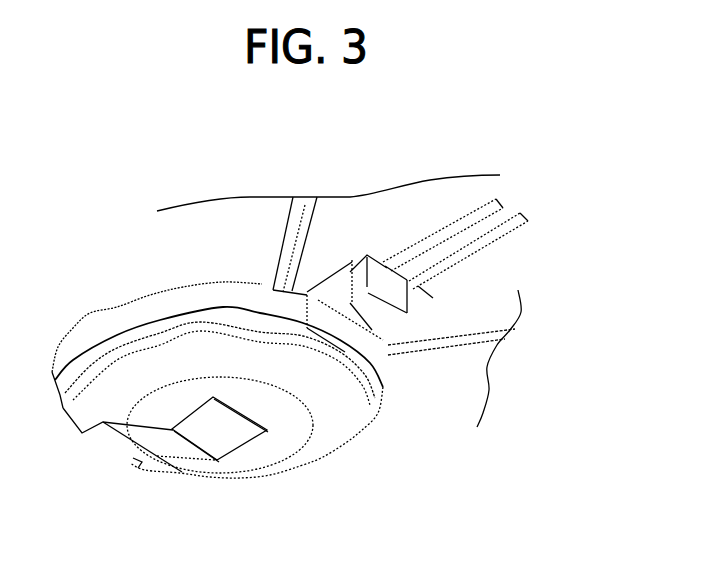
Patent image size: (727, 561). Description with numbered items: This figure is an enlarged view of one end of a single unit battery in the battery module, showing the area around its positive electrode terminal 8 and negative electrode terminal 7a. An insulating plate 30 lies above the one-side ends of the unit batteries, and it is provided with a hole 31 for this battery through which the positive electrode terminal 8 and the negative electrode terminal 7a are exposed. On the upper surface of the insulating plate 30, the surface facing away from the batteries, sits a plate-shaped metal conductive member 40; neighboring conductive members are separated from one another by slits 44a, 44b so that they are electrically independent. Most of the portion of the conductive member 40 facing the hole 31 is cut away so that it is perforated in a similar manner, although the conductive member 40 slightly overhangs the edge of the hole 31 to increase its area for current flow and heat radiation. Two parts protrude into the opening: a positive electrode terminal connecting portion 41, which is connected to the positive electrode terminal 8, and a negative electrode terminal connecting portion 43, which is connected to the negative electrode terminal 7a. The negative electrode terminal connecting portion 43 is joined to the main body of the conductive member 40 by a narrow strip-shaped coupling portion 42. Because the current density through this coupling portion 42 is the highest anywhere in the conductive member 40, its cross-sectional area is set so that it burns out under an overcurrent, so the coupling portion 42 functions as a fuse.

The insulating plate 30 is at (240, 297).
The hole 31 is at (341, 415).
The positive electrode terminal 8 is at (272, 455).
The positive electrode terminal connecting portion 41 is at (169, 445).
The conductive member 40 is at (190, 214).
The slit 44b is at (277, 214).
The negative electrode terminal 7a is at (350, 298).
The negative electrode terminal connecting portion 43 is at (378, 306).
The coupling portion 42 is at (448, 243).
The slit 44a is at (443, 352).